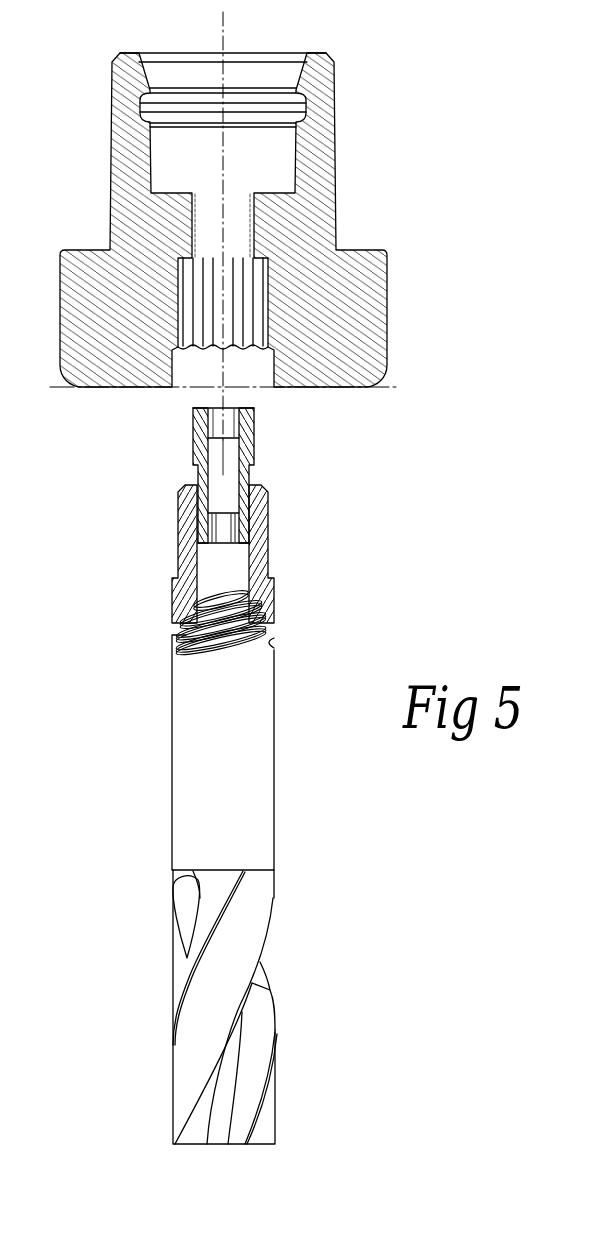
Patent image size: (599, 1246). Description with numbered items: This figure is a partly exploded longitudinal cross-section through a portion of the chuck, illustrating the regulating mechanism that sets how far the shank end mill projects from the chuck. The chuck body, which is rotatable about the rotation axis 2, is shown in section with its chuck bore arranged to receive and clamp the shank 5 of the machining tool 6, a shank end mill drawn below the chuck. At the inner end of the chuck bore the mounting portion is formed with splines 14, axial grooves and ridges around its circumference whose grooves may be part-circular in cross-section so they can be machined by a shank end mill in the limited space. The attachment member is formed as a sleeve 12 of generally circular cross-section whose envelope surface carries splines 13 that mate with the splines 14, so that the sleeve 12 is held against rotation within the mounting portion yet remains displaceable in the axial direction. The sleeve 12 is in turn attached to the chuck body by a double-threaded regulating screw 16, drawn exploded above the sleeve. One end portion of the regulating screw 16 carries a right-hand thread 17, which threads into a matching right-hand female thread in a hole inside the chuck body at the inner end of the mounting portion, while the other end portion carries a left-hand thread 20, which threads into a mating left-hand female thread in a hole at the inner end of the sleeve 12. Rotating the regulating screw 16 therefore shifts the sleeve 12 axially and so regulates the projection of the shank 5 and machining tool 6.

The rotation axis 2 is at (223, 30).
The splines 14 is at (208, 332).
The right-hand thread 17 is at (193, 448).
The regulating screw 16 is at (232, 534).
The left-hand thread 20 is at (200, 517).
The sleeve 12 is at (257, 538).
The splines 13 is at (212, 632).
The shank 5 is at (247, 788).
The machining tool 6 is at (148, 890).